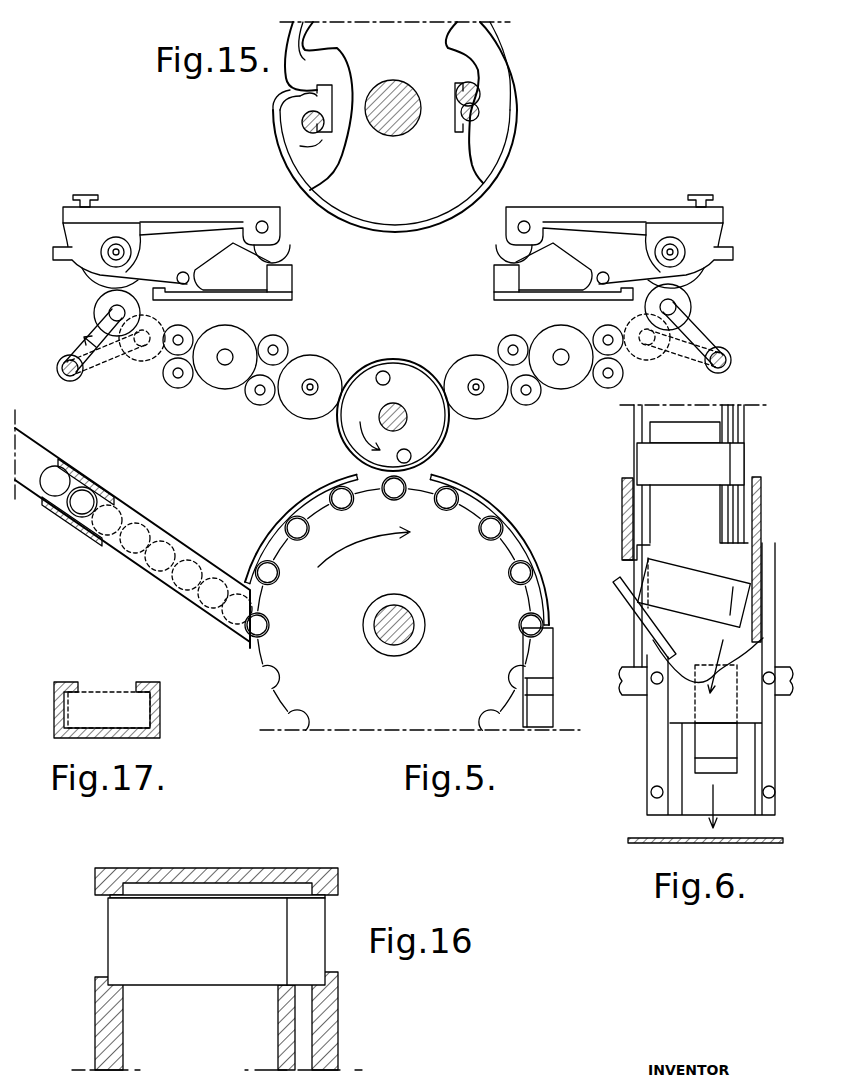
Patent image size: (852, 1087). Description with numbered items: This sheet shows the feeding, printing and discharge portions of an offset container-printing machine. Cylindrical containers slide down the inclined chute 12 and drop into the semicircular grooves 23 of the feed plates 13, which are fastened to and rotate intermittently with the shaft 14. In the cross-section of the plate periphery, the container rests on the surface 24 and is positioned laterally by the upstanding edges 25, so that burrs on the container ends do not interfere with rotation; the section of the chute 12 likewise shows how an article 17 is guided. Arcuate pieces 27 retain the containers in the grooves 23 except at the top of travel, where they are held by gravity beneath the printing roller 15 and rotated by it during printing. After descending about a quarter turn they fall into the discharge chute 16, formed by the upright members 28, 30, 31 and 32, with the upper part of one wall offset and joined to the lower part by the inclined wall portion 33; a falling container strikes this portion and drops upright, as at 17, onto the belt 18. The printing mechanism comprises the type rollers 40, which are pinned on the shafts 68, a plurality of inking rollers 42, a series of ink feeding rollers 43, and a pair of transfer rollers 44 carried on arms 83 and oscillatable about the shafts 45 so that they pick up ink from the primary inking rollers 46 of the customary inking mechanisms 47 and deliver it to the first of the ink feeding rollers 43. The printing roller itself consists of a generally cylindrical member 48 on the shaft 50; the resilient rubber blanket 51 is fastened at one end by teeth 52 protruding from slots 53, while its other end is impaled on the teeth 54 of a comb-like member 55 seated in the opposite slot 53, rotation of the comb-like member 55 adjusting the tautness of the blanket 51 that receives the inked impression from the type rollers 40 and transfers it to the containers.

In FIG. 5, the chute 12 is at (62, 473).
In FIG. 17, the chute 12 is at (158, 700).
In FIG. 5, the feed plates 13 is at (293, 685).
In FIG. 16, the feed plates 13 is at (98, 1018).
In FIG. 5, the shaft 14 is at (410, 625).
In FIG. 5, the printing roller 15 is at (403, 370).
In FIG. 5, the discharge chute 16 is at (556, 656).
In FIG. 5, the upright container position 17 is at (82, 508).
In FIG. 17, the upright container position 17 is at (100, 697).
In FIG. 6, the upright container position 17 is at (677, 570).
In FIG. 6, the belt 18 is at (647, 836).
In FIG. 5, the semicircular grooves 23 is at (393, 497).
In FIG. 16, the surface 24 is at (122, 987).
In FIG. 16, the upstanding edges 25 is at (95, 979).
In FIG. 5, the arcuate pieces 27 is at (295, 502).
In FIG. 6, the upright member 28 is at (755, 508).
In FIG. 6, the upright member 30 is at (622, 512).
In FIG. 6, the upright member 31 is at (678, 697).
In FIG. 6, the upright member 32 is at (677, 505).
In FIG. 6, the inclined wall portion 33 is at (626, 592).
In FIG. 5, the type rollers 40 is at (317, 362).
In FIG. 5, the inking rollers 42 is at (278, 337).
In FIG. 5, the ink feeding rollers 43 is at (219, 333).
In FIG. 5, the transfer rollers 44 is at (98, 304).
In FIG. 5, the shafts 45 is at (60, 363).
In FIG. 5, the primary inking rollers 46 is at (82, 277).
In FIG. 5, the inking mechanisms 47 is at (118, 213).
In FIG. 15, the cylindrical member 48 is at (473, 147).
In FIG. 15, the shaft 50 is at (393, 128).
In FIG. 5, the shaft 50 is at (407, 418).
In FIG. 15, the rubber printing blanket 51 is at (490, 168).
In FIG. 15, the teeth 52 is at (480, 118).
In FIG. 15, the slots 53 is at (332, 105).
In FIG. 15, the teeth 54 is at (323, 108).
In FIG. 15, the comb-like member 55 is at (302, 124).
In FIG. 5, the shafts 68 is at (308, 390).
In FIG. 5, the arms 83 is at (80, 342).